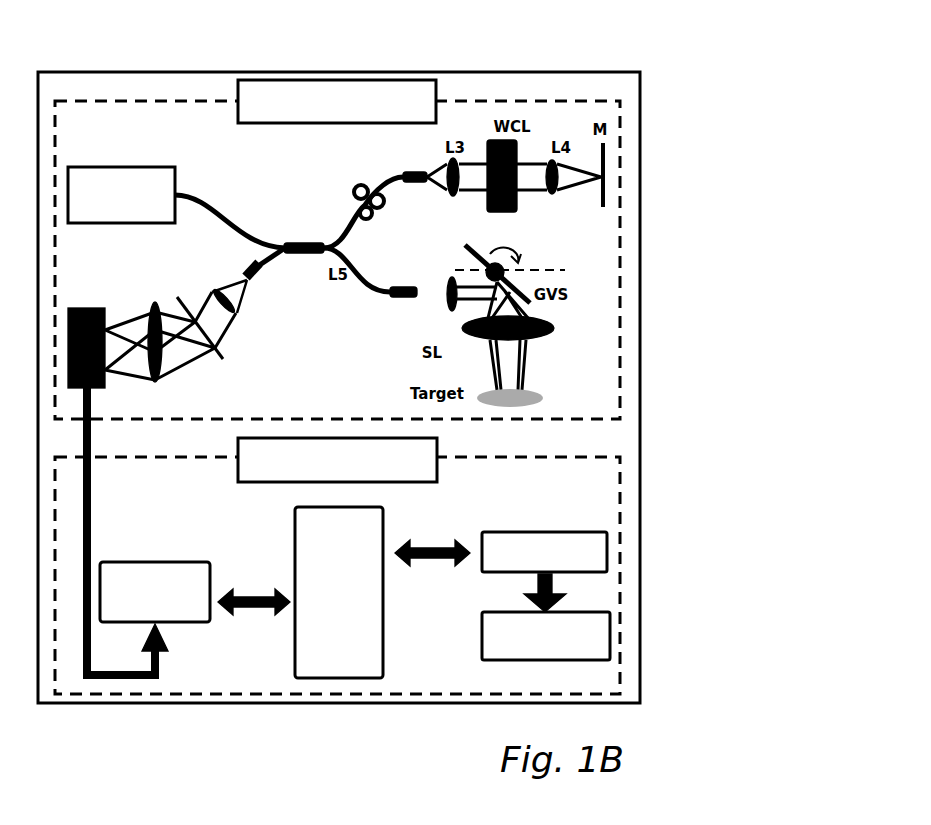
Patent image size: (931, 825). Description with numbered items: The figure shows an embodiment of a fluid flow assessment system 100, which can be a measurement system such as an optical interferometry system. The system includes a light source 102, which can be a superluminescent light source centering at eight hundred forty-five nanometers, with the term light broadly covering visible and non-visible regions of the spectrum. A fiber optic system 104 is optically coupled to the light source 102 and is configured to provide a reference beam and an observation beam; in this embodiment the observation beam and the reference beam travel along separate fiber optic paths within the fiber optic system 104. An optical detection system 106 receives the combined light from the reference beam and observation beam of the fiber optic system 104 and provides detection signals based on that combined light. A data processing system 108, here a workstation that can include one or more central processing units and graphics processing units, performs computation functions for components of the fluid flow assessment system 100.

The fluid flow assessment system 100 is at (573, 71).
The light source 102 is at (122, 167).
The fiber optic system 104 is at (286, 199).
The optical detection system 106 is at (143, 281).
The data processing system 108 is at (647, 457).